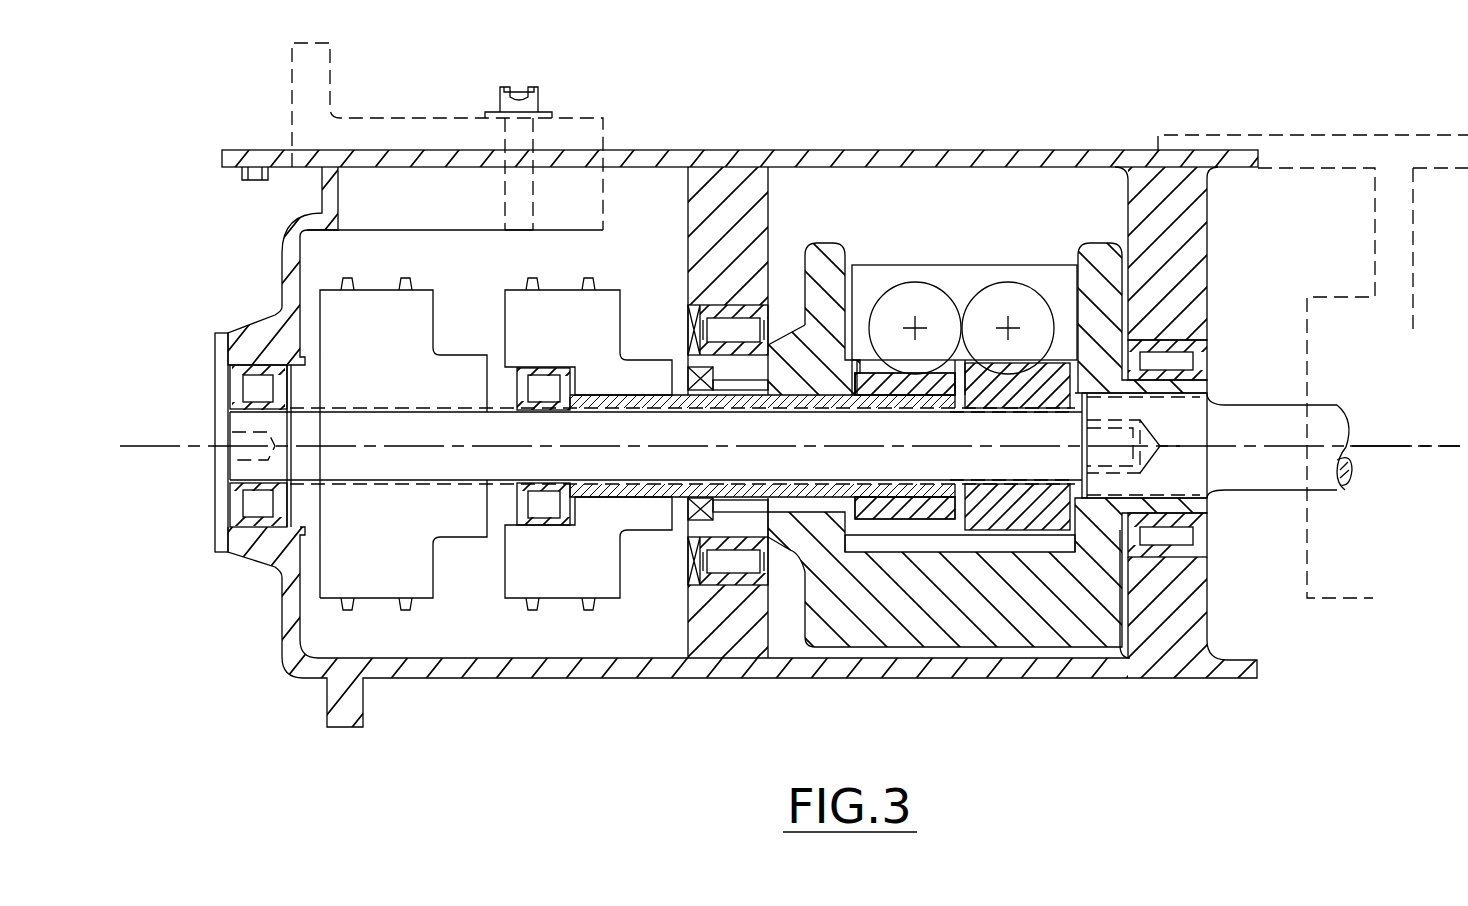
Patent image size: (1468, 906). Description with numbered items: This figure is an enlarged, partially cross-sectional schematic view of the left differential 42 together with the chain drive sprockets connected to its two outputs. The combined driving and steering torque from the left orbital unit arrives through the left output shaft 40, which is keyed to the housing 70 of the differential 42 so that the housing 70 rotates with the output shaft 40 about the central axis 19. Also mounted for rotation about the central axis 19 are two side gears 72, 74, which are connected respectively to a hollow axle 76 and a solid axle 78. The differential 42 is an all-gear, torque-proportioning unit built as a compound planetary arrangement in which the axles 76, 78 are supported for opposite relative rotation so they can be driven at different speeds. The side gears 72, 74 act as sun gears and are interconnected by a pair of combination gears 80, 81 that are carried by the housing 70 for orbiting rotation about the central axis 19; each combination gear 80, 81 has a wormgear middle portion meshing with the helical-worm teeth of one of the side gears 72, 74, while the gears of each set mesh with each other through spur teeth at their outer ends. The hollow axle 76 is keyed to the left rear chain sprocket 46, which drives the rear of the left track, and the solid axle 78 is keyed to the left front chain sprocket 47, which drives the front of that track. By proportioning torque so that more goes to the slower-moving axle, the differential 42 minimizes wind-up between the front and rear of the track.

The central axis 19 is at (1407, 448).
The left output shaft 40 is at (1318, 415).
The left differential 42 is at (1050, 204).
The left rear chain sprocket 46 is at (600, 320).
The left front chain sprocket 47 is at (413, 317).
The housing 70 is at (862, 630).
The side gear 72 is at (1020, 498).
The side gear 74 is at (915, 500).
The hollow axle 76 is at (753, 492).
The solid axle 78 is at (615, 433).
The combination gear 80 is at (993, 312).
The combination gear 81 is at (923, 297).